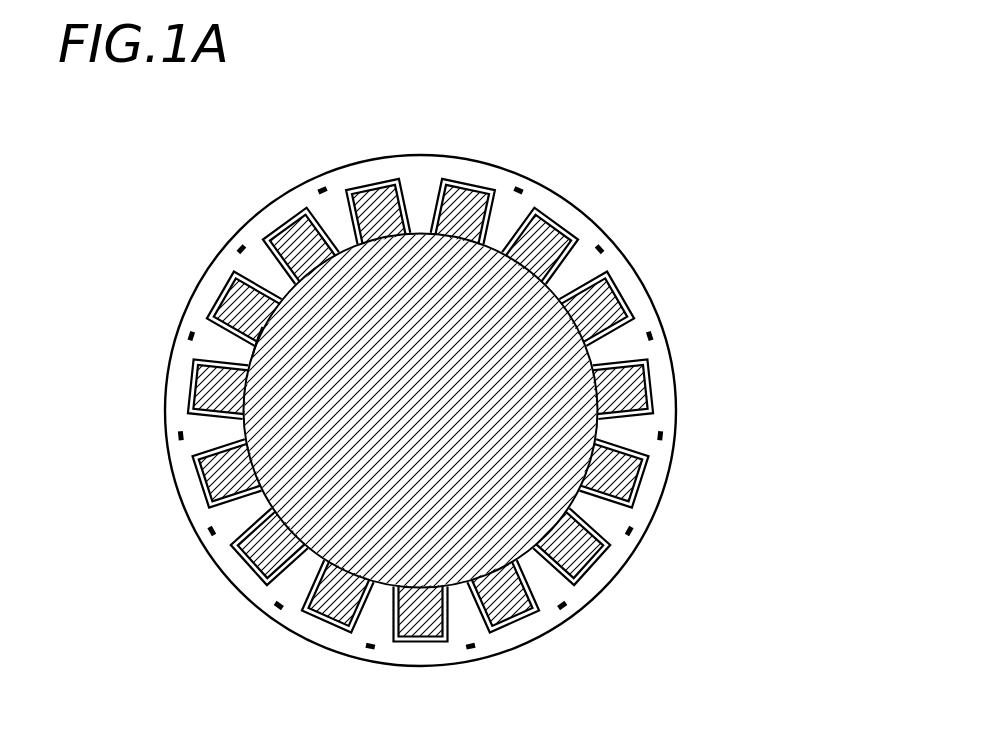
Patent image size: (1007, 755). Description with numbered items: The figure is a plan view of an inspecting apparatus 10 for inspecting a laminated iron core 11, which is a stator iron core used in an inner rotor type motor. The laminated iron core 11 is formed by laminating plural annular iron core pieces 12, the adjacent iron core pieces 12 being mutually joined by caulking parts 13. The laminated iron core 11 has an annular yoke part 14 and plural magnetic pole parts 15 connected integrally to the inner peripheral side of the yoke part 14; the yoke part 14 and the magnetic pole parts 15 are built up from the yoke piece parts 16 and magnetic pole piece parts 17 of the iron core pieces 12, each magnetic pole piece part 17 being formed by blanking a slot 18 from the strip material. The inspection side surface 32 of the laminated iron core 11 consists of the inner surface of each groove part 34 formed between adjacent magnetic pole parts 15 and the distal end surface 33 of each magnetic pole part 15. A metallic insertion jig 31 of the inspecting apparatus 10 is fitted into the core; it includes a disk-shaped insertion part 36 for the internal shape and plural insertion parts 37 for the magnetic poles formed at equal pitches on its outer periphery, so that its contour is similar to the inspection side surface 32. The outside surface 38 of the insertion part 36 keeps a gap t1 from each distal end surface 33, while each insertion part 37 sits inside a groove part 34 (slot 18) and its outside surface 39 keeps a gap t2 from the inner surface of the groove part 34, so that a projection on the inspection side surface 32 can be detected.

The inspecting apparatus 10 is at (486, 182).
The laminated iron core 11 is at (577, 202).
The iron core piece 12 is at (617, 263).
The caulking part 13 is at (655, 334).
The yoke part 14 is at (655, 485).
The magnetic pole part 15 is at (615, 522).
The yoke piece part 16 is at (607, 573).
The magnetic pole piece part 17 is at (545, 588).
The slot 18 is at (653, 385).
The insertion jig 31 is at (272, 222).
The inspection side surface 32 is at (262, 447).
The distal end surface 33 is at (272, 503).
The groove part 34 is at (257, 560).
The insertion part for internal shape 36 is at (420, 265).
The insertion part for magnetic pole 37 is at (466, 215).
The outside surface 38 is at (320, 557).
The outside surface 39 is at (283, 570).
The gap t1 is at (283, 366).
The gap t2 is at (246, 317).